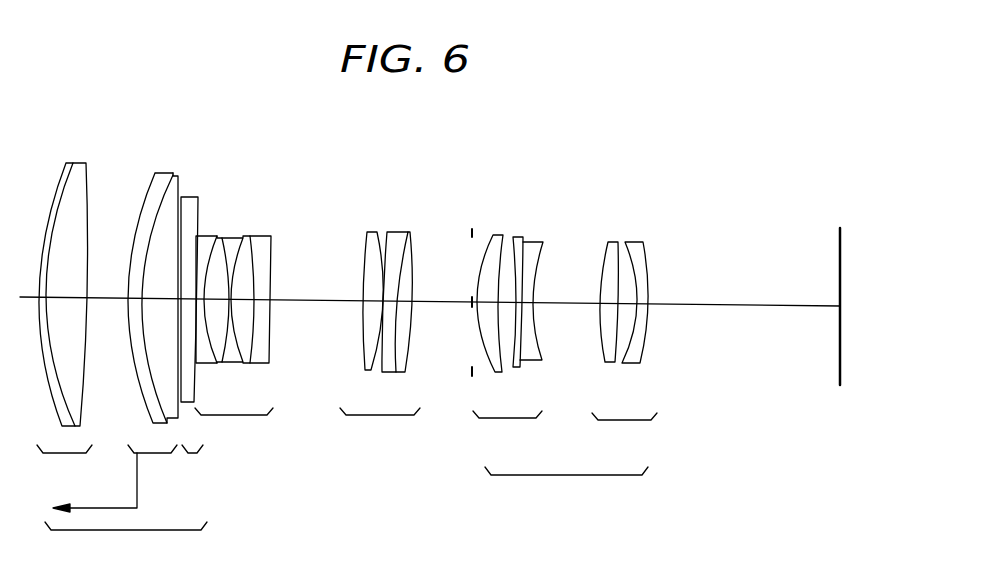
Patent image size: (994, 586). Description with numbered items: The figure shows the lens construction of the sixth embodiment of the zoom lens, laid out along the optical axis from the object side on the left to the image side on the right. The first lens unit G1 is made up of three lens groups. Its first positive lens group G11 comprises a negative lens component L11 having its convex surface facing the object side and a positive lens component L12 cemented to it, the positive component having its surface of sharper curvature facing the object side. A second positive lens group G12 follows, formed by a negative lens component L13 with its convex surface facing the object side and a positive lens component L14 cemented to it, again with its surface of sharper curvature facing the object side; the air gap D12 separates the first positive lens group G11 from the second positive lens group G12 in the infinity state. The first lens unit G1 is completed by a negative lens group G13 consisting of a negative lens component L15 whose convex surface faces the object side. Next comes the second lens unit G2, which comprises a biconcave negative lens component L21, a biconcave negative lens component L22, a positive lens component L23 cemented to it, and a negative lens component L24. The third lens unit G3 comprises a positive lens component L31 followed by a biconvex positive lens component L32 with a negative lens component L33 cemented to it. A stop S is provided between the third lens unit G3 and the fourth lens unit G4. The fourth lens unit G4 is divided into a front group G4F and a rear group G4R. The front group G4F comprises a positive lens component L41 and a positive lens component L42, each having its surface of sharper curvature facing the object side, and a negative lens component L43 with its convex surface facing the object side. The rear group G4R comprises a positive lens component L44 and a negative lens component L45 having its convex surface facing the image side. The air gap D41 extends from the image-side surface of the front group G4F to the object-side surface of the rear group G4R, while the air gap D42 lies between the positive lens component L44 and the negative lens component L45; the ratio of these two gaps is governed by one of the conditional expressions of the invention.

The negative lens component L11 is at (65, 170).
The positive lens component L12 is at (84, 172).
The negative lens component L13 is at (153, 188).
The positive lens component L14 is at (176, 176).
The negative lens component L15 is at (190, 195).
The biconcave negative lens component L21 is at (205, 237).
The biconcave negative lens component L22 is at (230, 238).
The positive lens component L23 is at (252, 238).
The negative lens component L24 is at (262, 240).
The positive lens component L31 is at (370, 232).
The biconvex positive lens component L32 is at (388, 232).
The negative lens component L33 is at (405, 238).
The positive lens component L41 is at (497, 235).
The positive lens component L42 is at (517, 238).
The negative lens component L43 is at (533, 247).
The positive lens component L44 is at (610, 245).
The negative lens component L45 is at (635, 245).
The first lens unit G1 is at (126, 508).
The first positive lens group G11 is at (64, 465).
The second positive lens group G12 is at (152, 465).
The negative lens group G13 is at (197, 465).
The second lens unit G2 is at (234, 427).
The third lens unit G3 is at (380, 428).
The fourth lens unit G4 is at (566, 486).
The front group G4F is at (507, 430).
The rear group G4R is at (624, 432).
The air gap D12 is at (107, 317).
The air gap D41 is at (574, 319).
The air gap D42 is at (624, 302).
The stop S is at (471, 292).